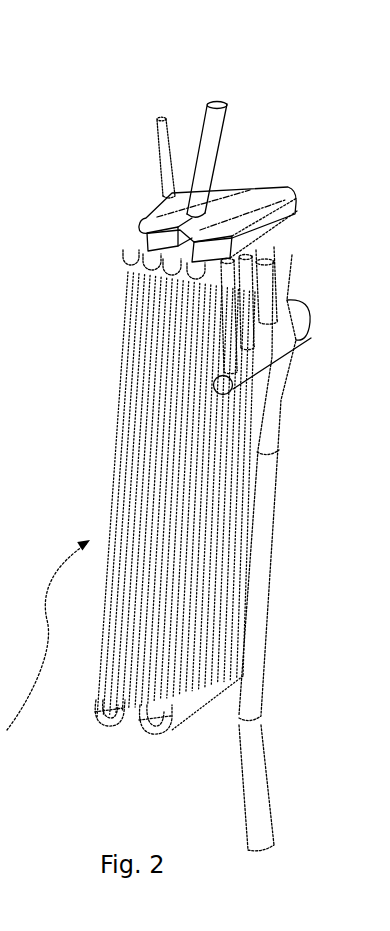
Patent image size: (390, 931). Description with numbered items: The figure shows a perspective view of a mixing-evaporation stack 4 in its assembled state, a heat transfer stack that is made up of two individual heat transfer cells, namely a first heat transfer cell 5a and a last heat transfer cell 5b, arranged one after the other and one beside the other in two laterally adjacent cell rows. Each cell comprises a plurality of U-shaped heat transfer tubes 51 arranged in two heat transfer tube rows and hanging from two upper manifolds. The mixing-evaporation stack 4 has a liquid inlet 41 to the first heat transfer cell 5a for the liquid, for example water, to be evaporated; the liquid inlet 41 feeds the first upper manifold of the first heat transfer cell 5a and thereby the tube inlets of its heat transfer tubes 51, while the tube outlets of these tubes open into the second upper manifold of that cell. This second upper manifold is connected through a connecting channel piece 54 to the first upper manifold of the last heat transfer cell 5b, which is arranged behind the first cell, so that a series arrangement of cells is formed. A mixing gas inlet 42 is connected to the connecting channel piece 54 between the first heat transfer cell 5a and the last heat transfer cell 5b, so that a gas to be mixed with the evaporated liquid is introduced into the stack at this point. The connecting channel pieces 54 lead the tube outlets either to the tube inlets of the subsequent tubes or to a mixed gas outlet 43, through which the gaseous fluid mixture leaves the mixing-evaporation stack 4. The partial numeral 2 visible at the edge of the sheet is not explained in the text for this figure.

The heat exchanger 2 is at (4, 88).
The mixing-evaporation stack 4 is at (389, 522).
The liquid inlet 41 is at (163, 147).
The mixing gas inlet 42 is at (213, 130).
The mixed gas outlet 43 is at (267, 437).
The U-shaped heat transfer tubes 51 is at (172, 420).
The connecting channel piece 54 is at (246, 212).
The first heat transfer cell 5a is at (108, 727).
The last heat transfer cell 5b is at (152, 738).